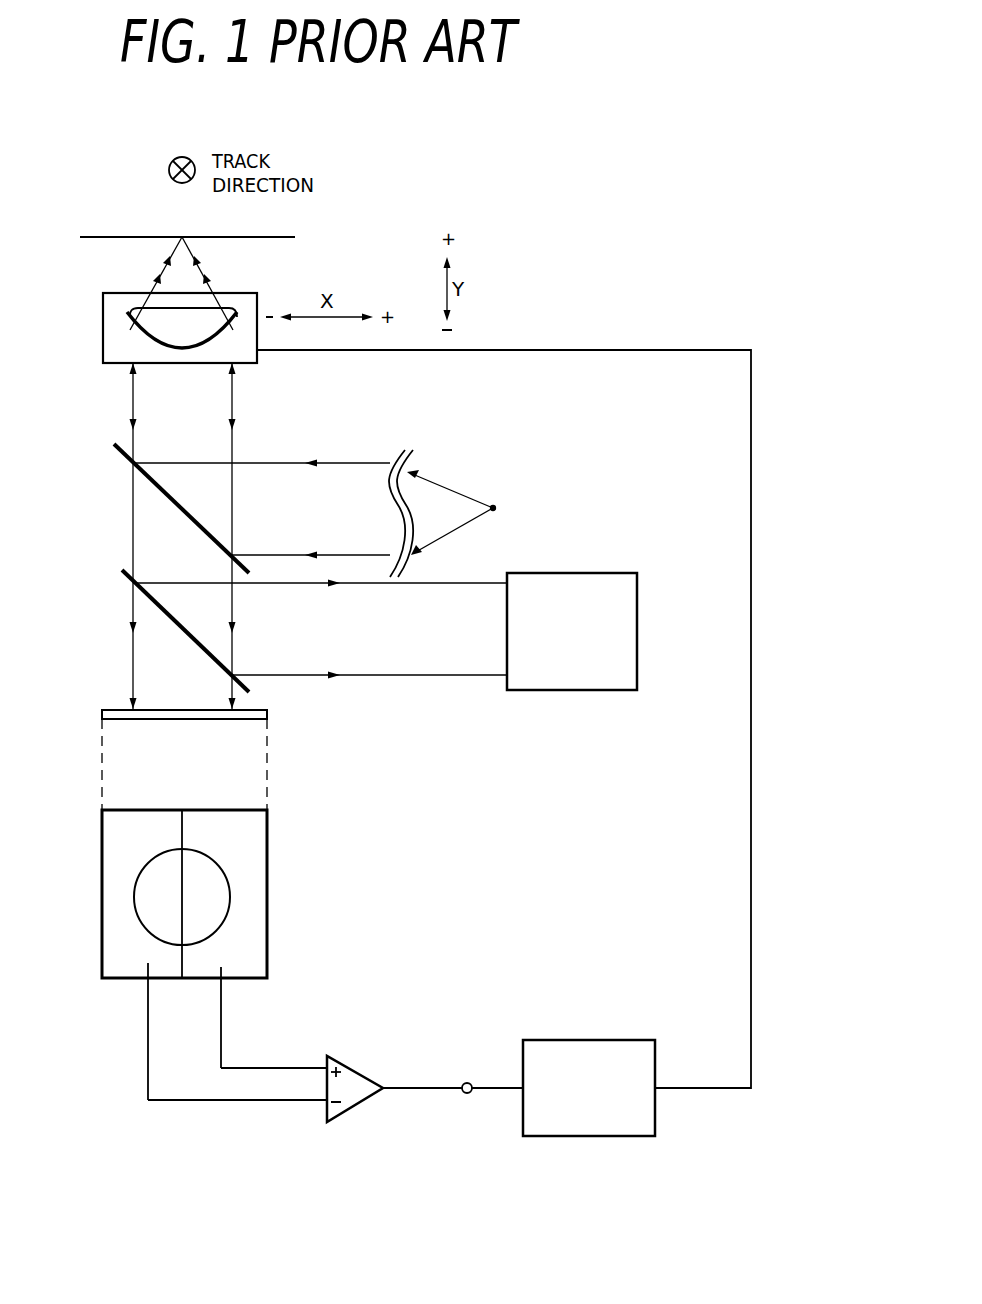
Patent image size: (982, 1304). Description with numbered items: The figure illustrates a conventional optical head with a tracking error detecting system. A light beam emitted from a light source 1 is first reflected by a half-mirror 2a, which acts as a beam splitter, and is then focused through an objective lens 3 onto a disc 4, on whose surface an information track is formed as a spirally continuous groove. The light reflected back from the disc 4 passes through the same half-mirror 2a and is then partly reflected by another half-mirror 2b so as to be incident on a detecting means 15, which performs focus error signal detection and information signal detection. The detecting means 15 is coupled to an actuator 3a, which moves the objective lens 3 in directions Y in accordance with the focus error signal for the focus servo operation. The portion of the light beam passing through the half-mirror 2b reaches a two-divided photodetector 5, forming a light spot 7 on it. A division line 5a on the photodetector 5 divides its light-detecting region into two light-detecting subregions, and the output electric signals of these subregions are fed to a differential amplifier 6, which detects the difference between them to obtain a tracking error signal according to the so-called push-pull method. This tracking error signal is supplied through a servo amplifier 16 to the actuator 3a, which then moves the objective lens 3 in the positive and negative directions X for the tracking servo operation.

The light source 1 is at (493, 505).
The half-mirror 2a is at (118, 450).
The half-mirror 2b is at (124, 576).
The objective lens 3 is at (131, 315).
The actuator 3a is at (113, 352).
The disc 4 is at (83, 242).
The two-divided photodetector 5 is at (102, 843).
The division line 5a is at (182, 958).
The differential amplifier 6 is at (357, 1069).
The light spot 7 is at (207, 873).
The detecting means 15 is at (618, 572).
The servo amplifier 16 is at (634, 1038).